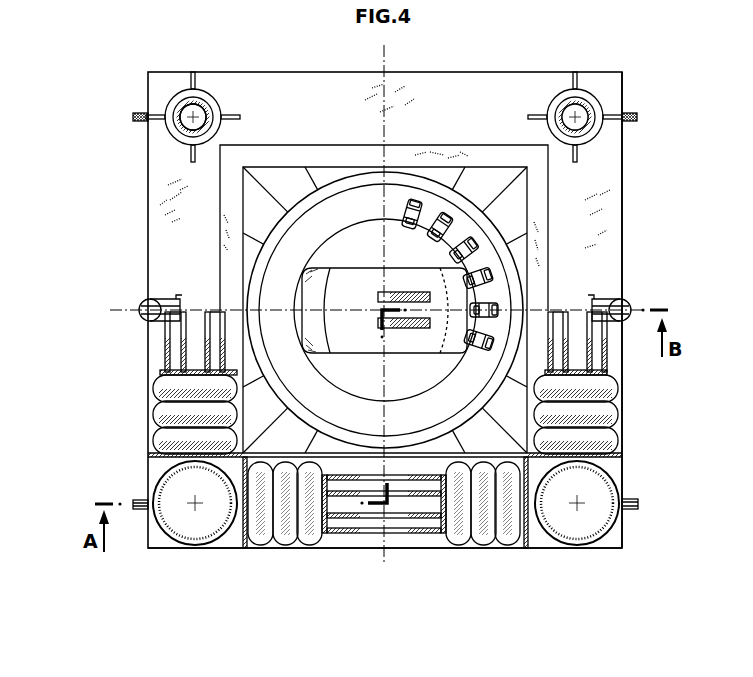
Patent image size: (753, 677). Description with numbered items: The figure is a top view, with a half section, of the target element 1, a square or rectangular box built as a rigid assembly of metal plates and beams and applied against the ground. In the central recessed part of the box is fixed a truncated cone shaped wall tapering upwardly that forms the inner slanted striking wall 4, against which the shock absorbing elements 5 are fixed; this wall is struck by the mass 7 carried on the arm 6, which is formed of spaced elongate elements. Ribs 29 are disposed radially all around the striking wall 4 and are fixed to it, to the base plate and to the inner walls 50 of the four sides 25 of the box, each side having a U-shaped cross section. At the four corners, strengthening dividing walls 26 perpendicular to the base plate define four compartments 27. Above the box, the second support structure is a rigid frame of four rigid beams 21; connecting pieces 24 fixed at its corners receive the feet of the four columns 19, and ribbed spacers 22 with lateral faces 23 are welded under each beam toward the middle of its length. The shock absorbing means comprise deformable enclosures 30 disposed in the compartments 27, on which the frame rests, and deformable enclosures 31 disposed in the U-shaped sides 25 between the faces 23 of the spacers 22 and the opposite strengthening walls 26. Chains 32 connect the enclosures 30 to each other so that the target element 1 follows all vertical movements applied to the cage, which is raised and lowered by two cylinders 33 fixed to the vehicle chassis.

The target element 1 is at (634, 464).
The inner slanted striking wall 4 is at (325, 222).
The shock absorbing elements 5 is at (427, 252).
The arm 6 is at (408, 328).
The mass 7 is at (355, 348).
The columns 19 is at (183, 127).
The rigid beams 21 is at (162, 204).
The ribbed spacers 22 is at (158, 345).
The lateral faces 23 is at (168, 374).
The connecting pieces 24 is at (172, 98).
The sides 25 is at (630, 399).
The strengthening dividing walls 26 is at (163, 457).
The compartments 27 is at (153, 550).
The ribs 29 is at (307, 443).
The deformable enclosures 30 is at (197, 528).
The deformable enclosures 31 is at (162, 435).
The chains 32 is at (133, 117).
The cylinders 33 is at (134, 295).
The inner walls 50 is at (503, 453).